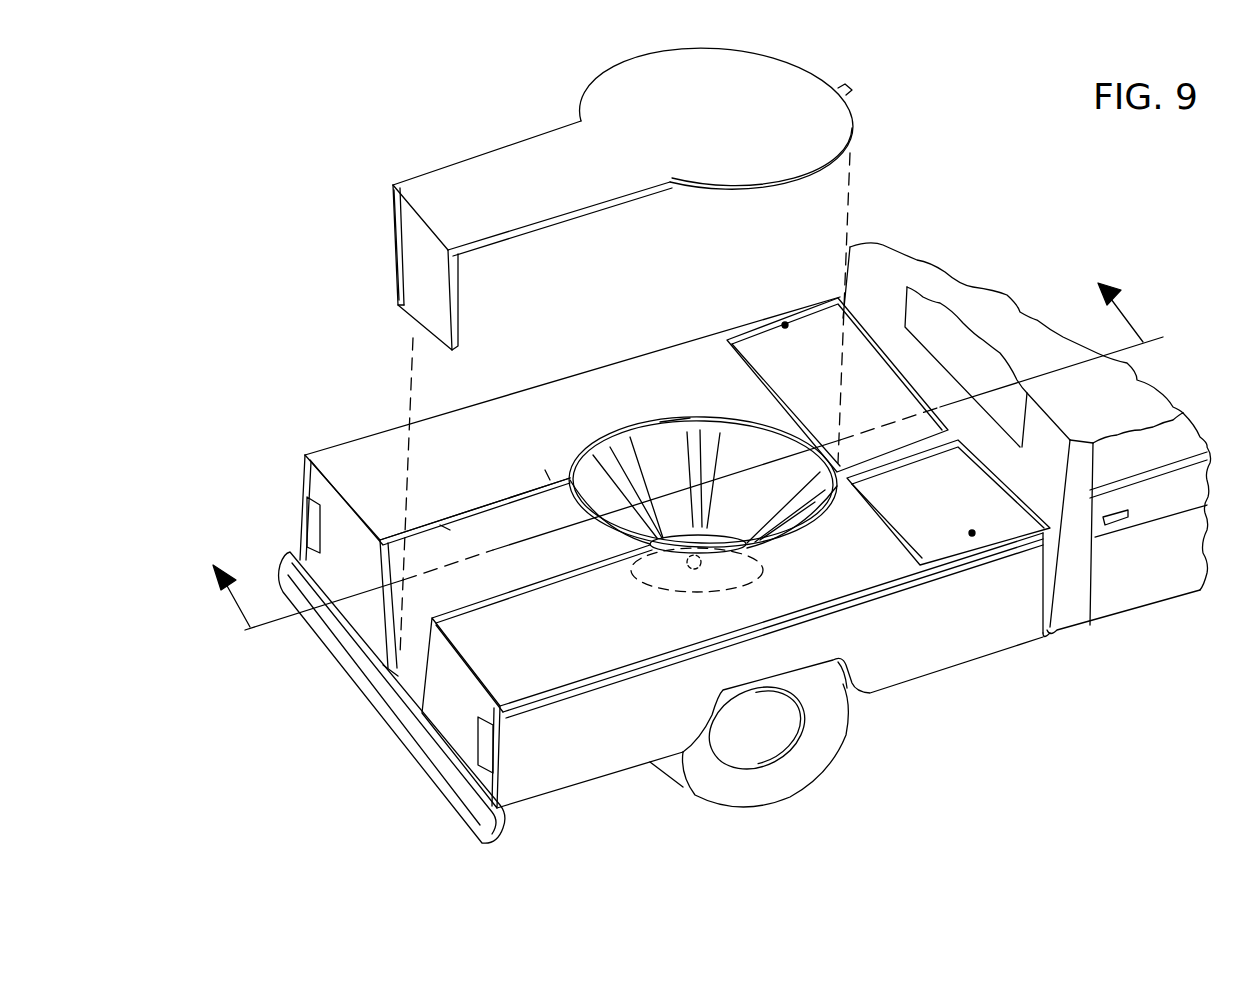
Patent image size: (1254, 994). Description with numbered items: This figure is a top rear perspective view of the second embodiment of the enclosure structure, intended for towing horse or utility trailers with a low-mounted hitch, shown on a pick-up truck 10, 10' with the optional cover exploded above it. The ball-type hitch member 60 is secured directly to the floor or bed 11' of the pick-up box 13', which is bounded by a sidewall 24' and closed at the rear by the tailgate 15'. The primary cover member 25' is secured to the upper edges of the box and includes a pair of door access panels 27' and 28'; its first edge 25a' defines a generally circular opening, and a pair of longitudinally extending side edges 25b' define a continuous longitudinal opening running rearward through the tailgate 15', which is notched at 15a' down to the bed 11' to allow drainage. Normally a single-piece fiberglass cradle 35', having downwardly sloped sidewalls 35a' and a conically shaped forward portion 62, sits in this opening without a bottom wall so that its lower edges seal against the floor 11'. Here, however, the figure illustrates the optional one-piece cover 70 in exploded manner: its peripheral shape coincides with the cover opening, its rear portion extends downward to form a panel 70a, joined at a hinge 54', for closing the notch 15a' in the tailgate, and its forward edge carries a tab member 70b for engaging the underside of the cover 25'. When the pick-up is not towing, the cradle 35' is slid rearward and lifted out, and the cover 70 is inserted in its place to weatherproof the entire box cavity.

The pick-up truck 10 is at (673, 440).
The pick-up truck (second embodiment) 10' is at (1027, 464).
The floor or bed 11' is at (392, 697).
The pick-up box 13' is at (850, 720).
The tailgate 15' is at (549, 500).
The notch 15a' is at (341, 698).
The sidewall of pick-up box 24' is at (290, 439).
The primary cover member 25' is at (732, 670).
The first edge 25a' is at (695, 399).
The longitudinally extending side edges 25b' is at (552, 529).
The door access panel 27' is at (837, 363).
The door access panel 28' is at (948, 534).
The cradle 35' is at (475, 496).
The sidewalls 35a' is at (446, 508).
The hinge 54' is at (357, 244).
The ball-type hitch member 60 is at (665, 575).
The conically shaped forward portion 62 is at (770, 450).
The one-piece cover 70 is at (763, 77).
The panel 70a is at (410, 283).
The tab member 70b is at (850, 90).